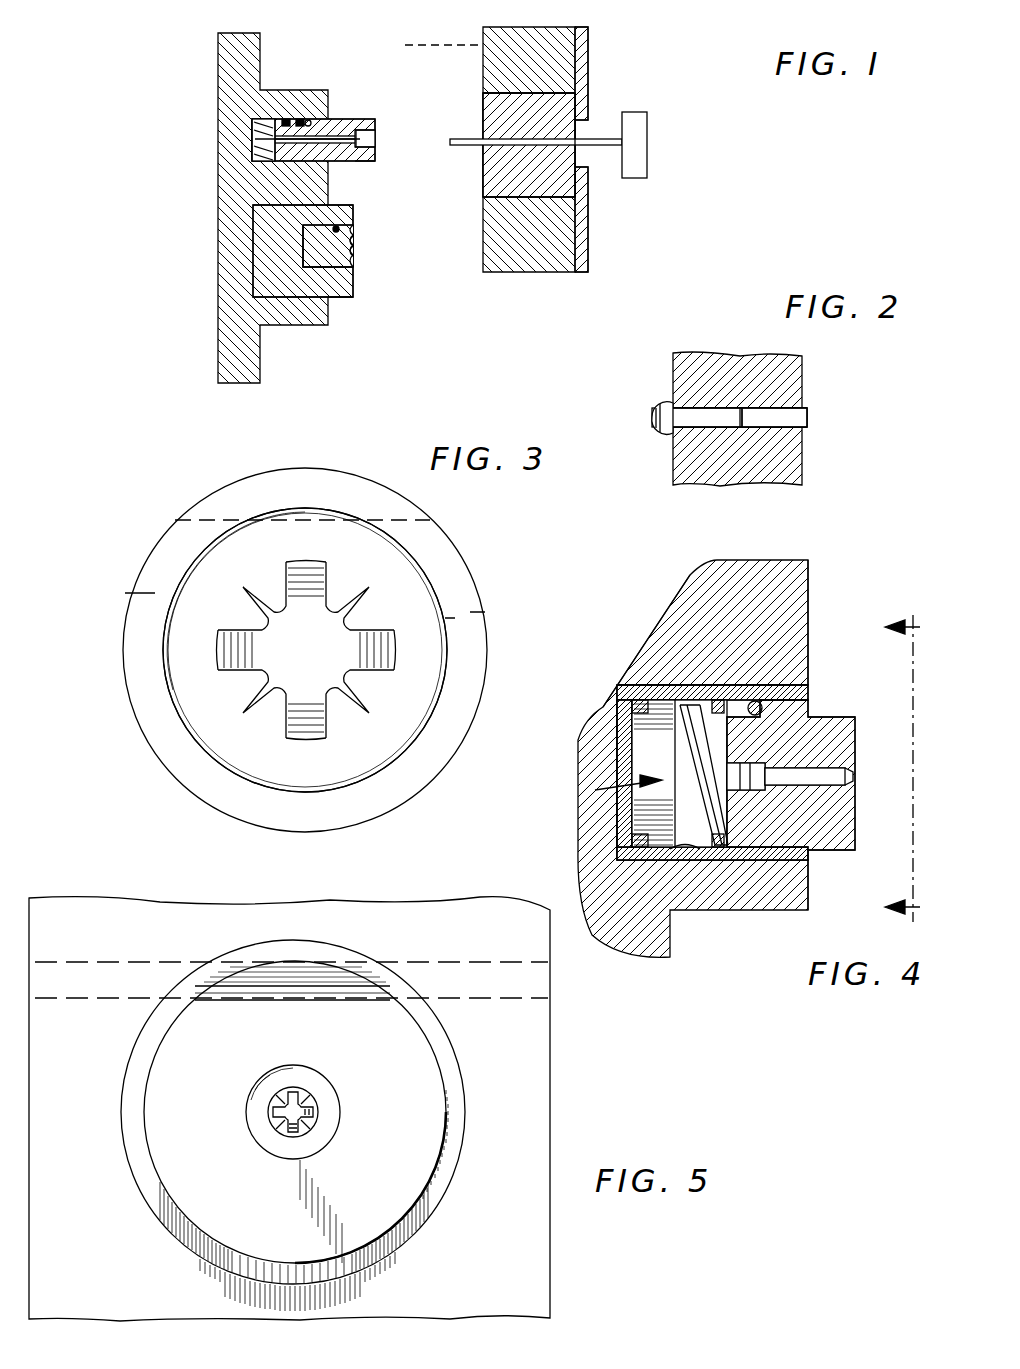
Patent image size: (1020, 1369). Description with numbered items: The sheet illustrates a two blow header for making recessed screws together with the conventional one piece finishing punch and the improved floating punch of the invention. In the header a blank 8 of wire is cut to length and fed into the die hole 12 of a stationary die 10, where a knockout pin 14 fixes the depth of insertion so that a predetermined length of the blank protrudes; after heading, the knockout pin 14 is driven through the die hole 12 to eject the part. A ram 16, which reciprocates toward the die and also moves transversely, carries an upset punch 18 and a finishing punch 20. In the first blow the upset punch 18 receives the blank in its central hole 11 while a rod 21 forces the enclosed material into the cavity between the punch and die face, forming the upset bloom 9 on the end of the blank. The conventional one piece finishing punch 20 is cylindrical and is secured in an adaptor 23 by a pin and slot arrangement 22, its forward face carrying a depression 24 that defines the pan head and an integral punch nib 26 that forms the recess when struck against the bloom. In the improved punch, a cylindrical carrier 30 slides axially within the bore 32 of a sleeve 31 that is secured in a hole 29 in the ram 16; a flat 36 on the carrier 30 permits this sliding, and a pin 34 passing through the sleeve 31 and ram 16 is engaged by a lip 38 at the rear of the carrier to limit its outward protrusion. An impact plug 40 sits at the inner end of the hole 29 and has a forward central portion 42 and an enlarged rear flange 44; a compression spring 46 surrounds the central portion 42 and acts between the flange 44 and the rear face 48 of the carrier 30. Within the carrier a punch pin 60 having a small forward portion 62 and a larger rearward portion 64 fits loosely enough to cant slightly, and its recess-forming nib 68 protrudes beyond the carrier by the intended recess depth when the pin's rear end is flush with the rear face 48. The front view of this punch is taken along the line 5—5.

In FIG. 1, the blank 8 is at (472, 140).
In FIG. 2, the blank 8 is at (688, 408).
In FIG. 2, the upset bloom 9 is at (650, 406).
In FIG. 1, the stationary die 10 is at (500, 172).
In FIG. 2, the stationary die 10 is at (718, 368).
In FIG. 1, the central hole 11 is at (355, 162).
In FIG. 1, the die hole 12 is at (500, 138).
In FIG. 1, the knockout pin 14 is at (560, 160).
In FIG. 2, the knockout pin 14 is at (800, 410).
In FIG. 1, the ram 16 is at (275, 100).
In FIG. 4, the ram 16 is at (785, 600).
In FIG. 5, the ram 16 is at (530, 1105).
In FIG. 1, the upset punch 18 is at (372, 112).
In FIG. 1, the finishing punch 20 is at (360, 268).
In FIG. 3, the finishing punch 20 is at (482, 555).
In FIG. 1, the rod 21 is at (325, 135).
In FIG. 1, the pin and slot arrangement 22 is at (345, 226).
In FIG. 3, the pin and slot arrangement 22 is at (410, 512).
In FIG. 1, the adaptor 23 is at (340, 290).
In FIG. 1, the depression 24 is at (358, 240).
In FIG. 3, the depression 24 is at (395, 735).
In FIG. 1, the punch nib 26 is at (356, 255).
In FIG. 3, the punch nib 26 is at (325, 638).
In FIG. 4, the hole 29 is at (645, 687).
In FIG. 4, the carrier 30 is at (858, 732).
In FIG. 5, the carrier 30 is at (410, 1172).
In FIG. 4, the sleeve 31 is at (810, 697).
In FIG. 5, the sleeve 31 is at (455, 1140).
In FIG. 4, the bore 32 is at (688, 860).
In FIG. 4, the pin 34 is at (805, 683).
In FIG. 5, the pin 34 is at (300, 982).
In FIG. 4, the flat 36 is at (760, 720).
In FIG. 5, the flat 36 is at (255, 992).
In FIG. 4, the lip 38 is at (790, 670).
In FIG. 4, the impact plug 40 is at (600, 789).
In FIG. 4, the central portion 42 is at (640, 740).
In FIG. 4, the flange 44 is at (625, 743).
In FIG. 4, the compression spring 46 is at (700, 850).
In FIG. 4, the rear face 48 is at (790, 660).
In FIG. 4, the line 5— 5 is at (895, 768).
In FIG. 4, the punch pin 60 is at (813, 805).
In FIG. 4, the forward portion 62 is at (858, 750).
In FIG. 4, the rearward portion 64 is at (808, 876).
In FIG. 4, the nib 68 is at (862, 771).